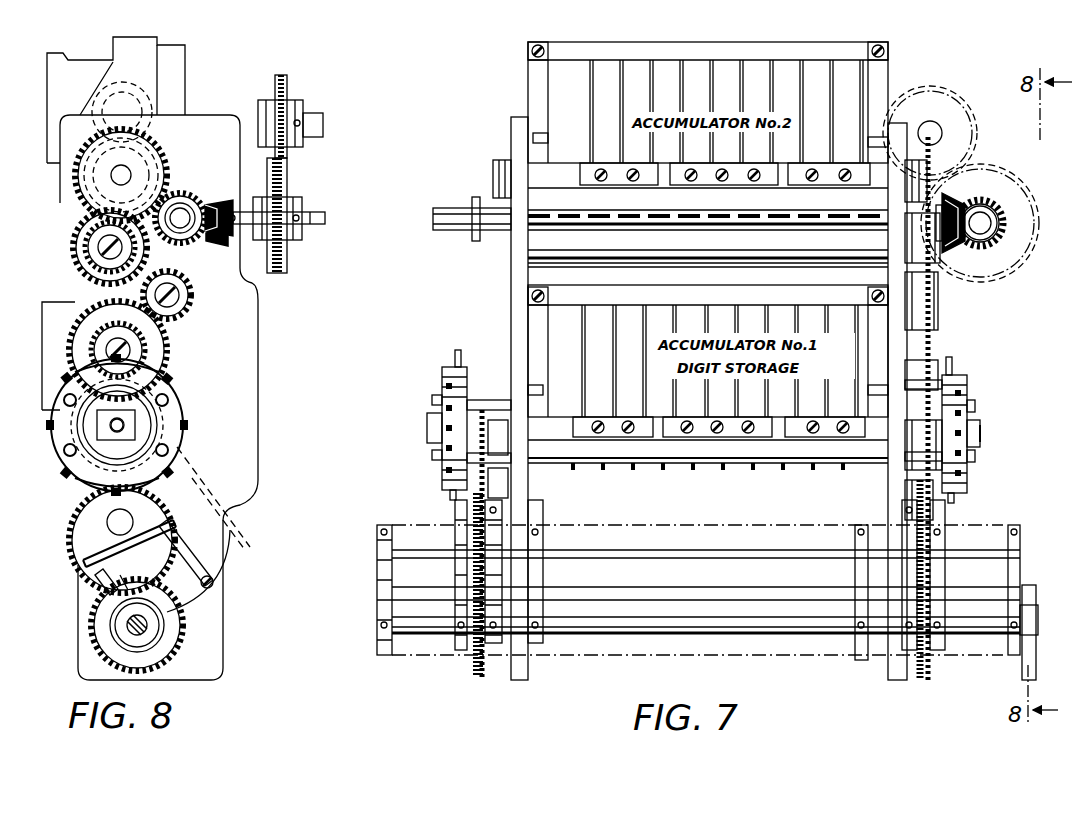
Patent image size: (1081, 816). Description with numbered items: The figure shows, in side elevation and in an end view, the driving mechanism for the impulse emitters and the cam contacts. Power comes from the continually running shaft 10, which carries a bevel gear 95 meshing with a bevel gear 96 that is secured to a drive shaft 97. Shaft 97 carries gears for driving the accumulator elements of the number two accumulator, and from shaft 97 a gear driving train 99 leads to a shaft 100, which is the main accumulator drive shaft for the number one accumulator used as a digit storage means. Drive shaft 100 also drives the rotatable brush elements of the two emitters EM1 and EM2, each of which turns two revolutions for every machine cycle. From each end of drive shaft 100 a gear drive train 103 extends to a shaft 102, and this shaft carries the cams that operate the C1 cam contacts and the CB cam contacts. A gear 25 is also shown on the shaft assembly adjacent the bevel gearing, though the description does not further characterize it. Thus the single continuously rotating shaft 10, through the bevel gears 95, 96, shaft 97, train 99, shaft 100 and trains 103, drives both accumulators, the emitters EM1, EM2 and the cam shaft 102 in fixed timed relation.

In FIG. 8, the continually running shaft 10 is at (318, 212).
In FIG. 7, the continually running shaft 10 is at (982, 222).
In FIG. 8, the gear 25 is at (290, 80).
In FIG. 7, the gear 25 is at (937, 92).
In FIG. 8, the bevel gear 95 is at (206, 241).
In FIG. 7, the bevel gear 95 is at (1006, 247).
In FIG. 8, the bevel gear 96 is at (185, 192).
In FIG. 7, the bevel gear 96 is at (932, 284).
In FIG. 7, the drive shaft 97 is at (497, 218).
In FIG. 8, the gear driving train 99 is at (168, 343).
In FIG. 7, the gear driving train 99 is at (925, 347).
In FIG. 8, the drive shaft 100 is at (113, 428).
In FIG. 7, the drive shaft 100 is at (980, 435).
In FIG. 8, the shaft 102 is at (147, 622).
In FIG. 7, the shaft 102 is at (772, 640).
In FIG. 8, the gear drive train 103 is at (162, 502).
In FIG. 7, the gear drive train 103 is at (465, 545).
In FIG. 8, the emitter EM1 is at (190, 410).
In FIG. 7, the emitter EM1 is at (967, 392).
In FIG. 7, the emitter EM2 is at (442, 388).
In FIG. 8, the cam contacts CB is at (76, 571).
In FIG. 7, the cam contacts CB is at (972, 661).
In FIG. 7, the cam contacts C1 is at (412, 657).